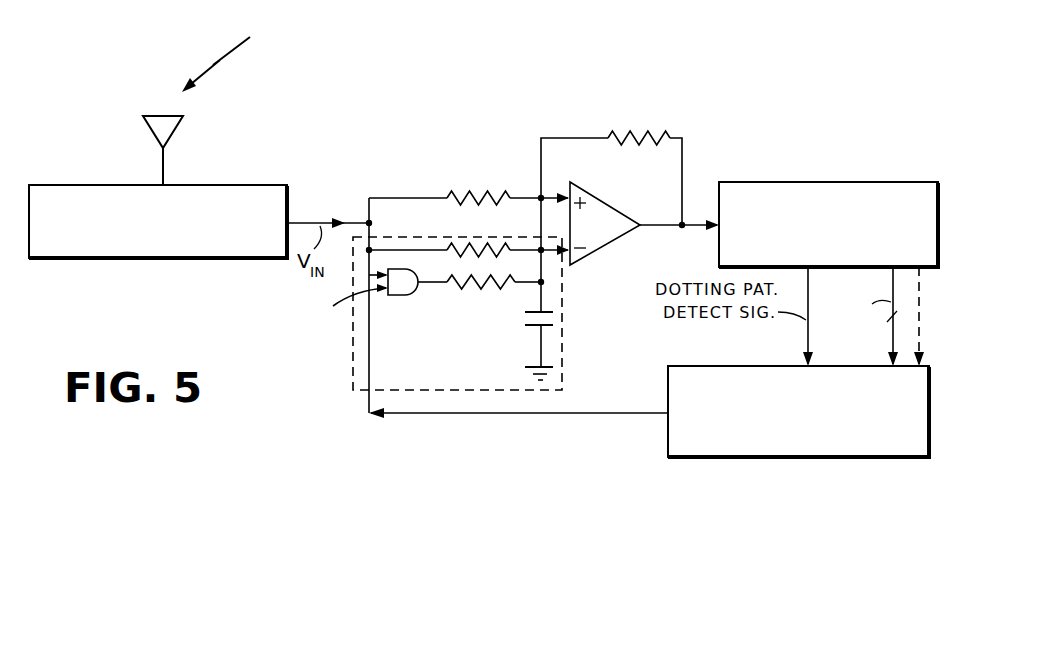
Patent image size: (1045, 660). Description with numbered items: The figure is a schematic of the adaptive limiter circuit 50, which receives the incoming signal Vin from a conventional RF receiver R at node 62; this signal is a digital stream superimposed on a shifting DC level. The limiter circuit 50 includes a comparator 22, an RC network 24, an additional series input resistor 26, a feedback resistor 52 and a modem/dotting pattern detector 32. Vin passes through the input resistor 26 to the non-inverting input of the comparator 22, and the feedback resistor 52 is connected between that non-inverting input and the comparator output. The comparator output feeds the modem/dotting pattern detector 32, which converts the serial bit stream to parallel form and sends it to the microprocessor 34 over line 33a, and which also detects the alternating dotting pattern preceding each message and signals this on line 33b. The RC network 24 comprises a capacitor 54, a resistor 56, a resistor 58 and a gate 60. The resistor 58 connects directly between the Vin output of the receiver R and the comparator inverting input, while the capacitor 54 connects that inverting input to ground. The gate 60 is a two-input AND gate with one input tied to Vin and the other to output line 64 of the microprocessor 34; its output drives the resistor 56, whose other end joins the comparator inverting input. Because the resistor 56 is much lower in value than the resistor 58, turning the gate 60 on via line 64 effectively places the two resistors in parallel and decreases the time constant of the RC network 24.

The RF receiver R is at (205, 185).
The receiver output node / input signal line 62 is at (366, 221).
The series input resistor 26 is at (455, 196).
The resistor 58 is at (473, 249).
The gate 60 is at (356, 295).
The resistor 56 is at (474, 288).
The capacitor 54 is at (554, 327).
The RC network 24 is at (562, 390).
The comparator 22 is at (598, 248).
The feedback resistor 52 is at (615, 131).
The adaptive limiter circuit 50 is at (710, 148).
The modem/dotting pattern detector 32 is at (760, 179).
The line 33b is at (810, 307).
The line 33a is at (890, 345).
The microprocessor 34 is at (733, 366).
The output line 64 is at (472, 415).